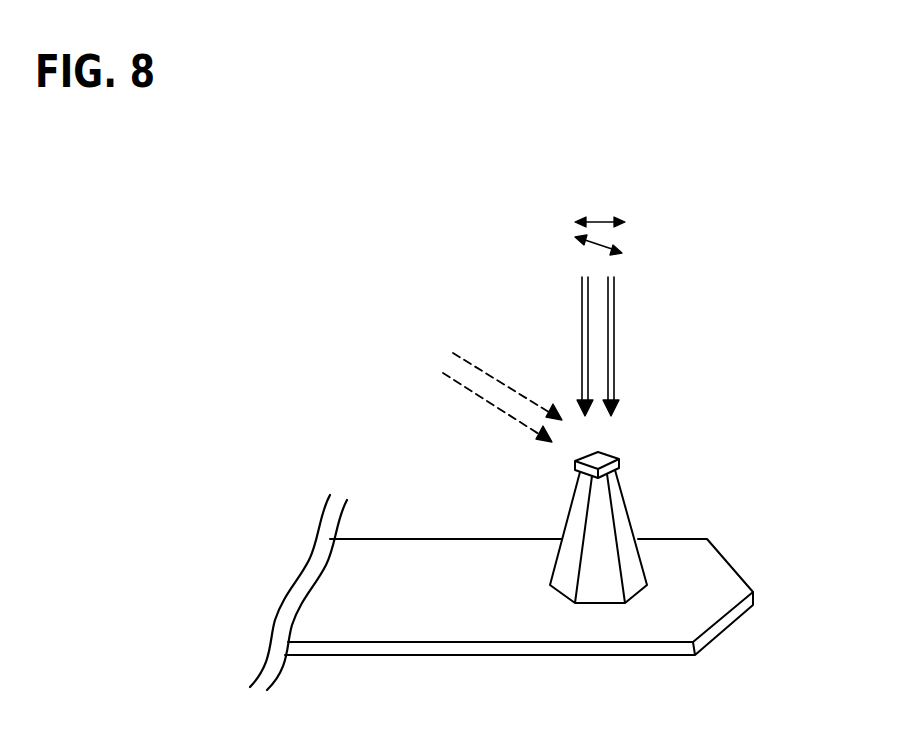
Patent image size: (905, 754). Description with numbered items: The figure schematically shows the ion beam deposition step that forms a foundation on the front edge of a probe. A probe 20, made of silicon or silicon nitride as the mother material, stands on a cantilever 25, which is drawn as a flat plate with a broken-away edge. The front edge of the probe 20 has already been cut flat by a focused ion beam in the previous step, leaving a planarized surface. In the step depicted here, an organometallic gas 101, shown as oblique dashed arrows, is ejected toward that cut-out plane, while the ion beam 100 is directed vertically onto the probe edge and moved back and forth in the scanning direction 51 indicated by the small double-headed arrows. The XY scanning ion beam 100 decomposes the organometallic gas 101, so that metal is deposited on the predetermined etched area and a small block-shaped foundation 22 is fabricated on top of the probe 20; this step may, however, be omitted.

The cantilever 25 is at (402, 562).
The probe 20 is at (617, 507).
The foundation 22 is at (600, 455).
The ion beam 100 is at (615, 303).
The organometallic gas 101 is at (507, 383).
The scanning direction 51 is at (602, 221).